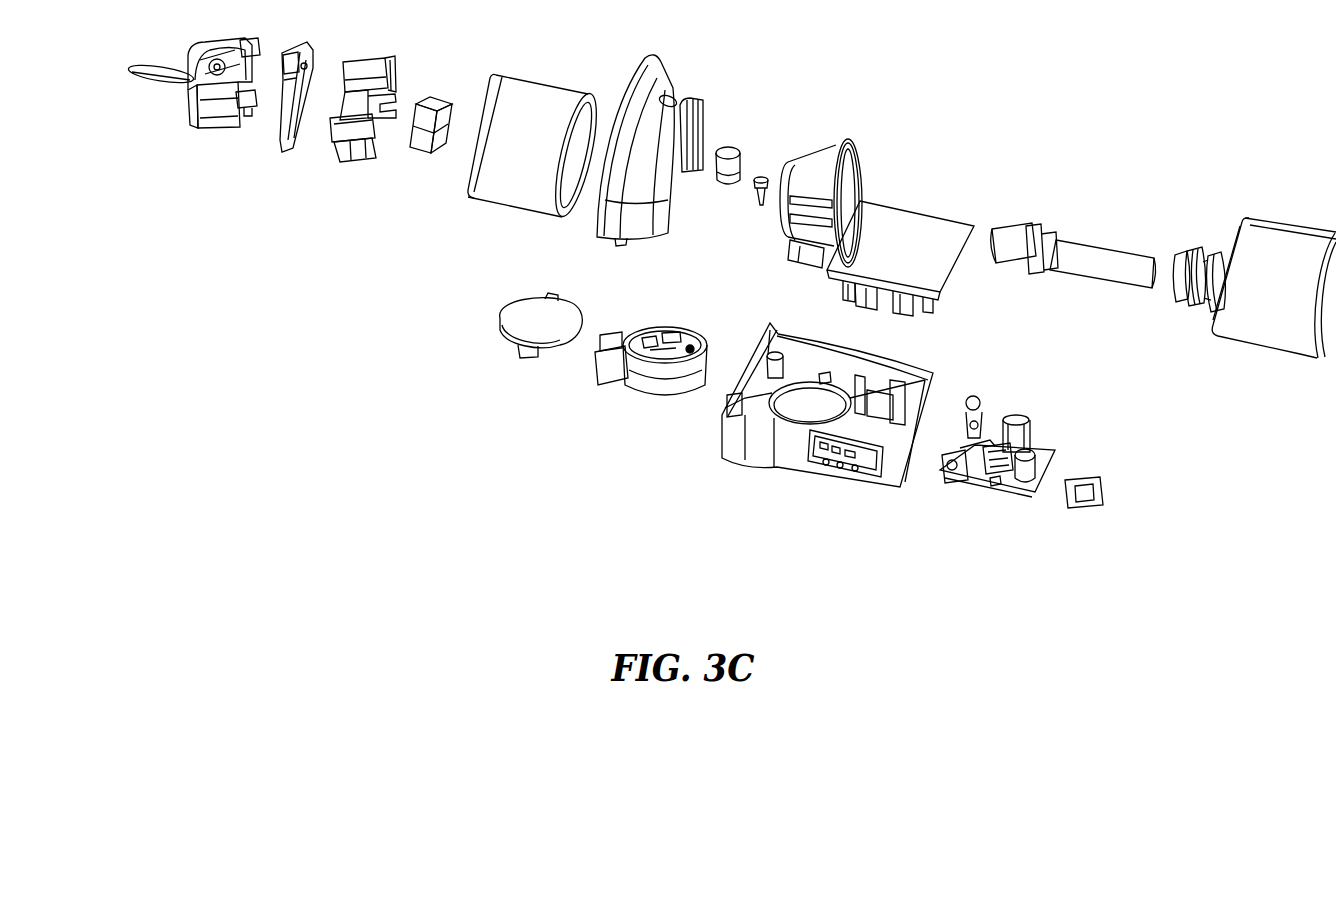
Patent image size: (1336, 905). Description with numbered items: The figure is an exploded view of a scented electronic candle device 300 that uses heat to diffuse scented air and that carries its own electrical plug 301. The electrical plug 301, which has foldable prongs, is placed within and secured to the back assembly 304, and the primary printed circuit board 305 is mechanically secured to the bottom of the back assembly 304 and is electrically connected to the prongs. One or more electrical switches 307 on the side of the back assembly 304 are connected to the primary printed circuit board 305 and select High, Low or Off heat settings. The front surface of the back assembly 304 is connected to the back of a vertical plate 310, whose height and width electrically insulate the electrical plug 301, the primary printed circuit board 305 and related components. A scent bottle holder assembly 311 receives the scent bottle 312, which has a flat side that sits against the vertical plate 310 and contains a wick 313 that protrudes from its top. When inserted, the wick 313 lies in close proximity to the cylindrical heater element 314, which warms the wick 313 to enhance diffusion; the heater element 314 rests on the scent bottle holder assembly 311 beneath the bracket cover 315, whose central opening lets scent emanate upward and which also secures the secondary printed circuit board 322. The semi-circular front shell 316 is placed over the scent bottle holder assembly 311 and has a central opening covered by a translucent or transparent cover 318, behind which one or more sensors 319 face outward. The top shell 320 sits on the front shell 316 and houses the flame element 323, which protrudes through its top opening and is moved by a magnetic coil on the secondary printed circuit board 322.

The scented electronic candle device 300 is at (303, 520).
The electrical plug 301 is at (621, 414).
The back assembly 304 is at (776, 474).
The primary printed circuit board 305 is at (967, 497).
The electrical switch 307 is at (1088, 523).
The vertical plate 310 is at (909, 228).
The scent bottle holder assembly 311 is at (810, 172).
The scent bottle 312 is at (1290, 254).
The wick 313 is at (1017, 236).
The heater element 314 is at (418, 168).
The bracket cover 315 is at (350, 176).
The front shell 316 is at (637, 243).
The translucent or transparent cover 318 is at (718, 199).
The sensor 319 is at (766, 166).
The top shell 320 is at (503, 216).
The secondary printed circuit board 322 is at (278, 158).
The flame element 323 is at (162, 92).